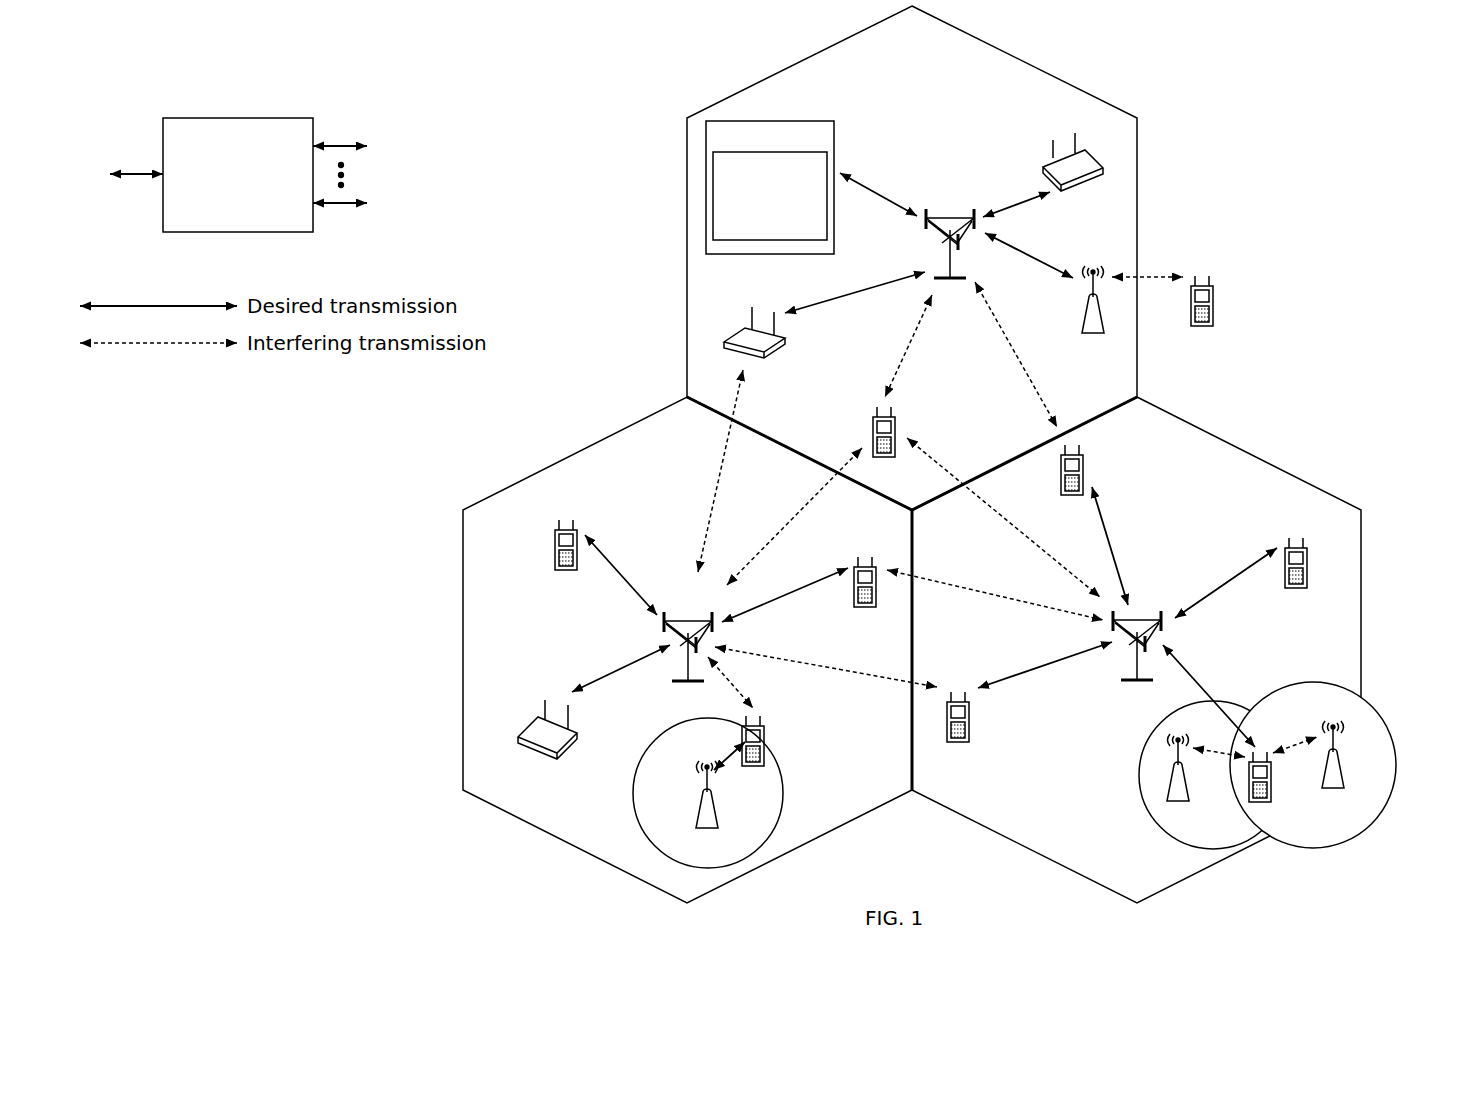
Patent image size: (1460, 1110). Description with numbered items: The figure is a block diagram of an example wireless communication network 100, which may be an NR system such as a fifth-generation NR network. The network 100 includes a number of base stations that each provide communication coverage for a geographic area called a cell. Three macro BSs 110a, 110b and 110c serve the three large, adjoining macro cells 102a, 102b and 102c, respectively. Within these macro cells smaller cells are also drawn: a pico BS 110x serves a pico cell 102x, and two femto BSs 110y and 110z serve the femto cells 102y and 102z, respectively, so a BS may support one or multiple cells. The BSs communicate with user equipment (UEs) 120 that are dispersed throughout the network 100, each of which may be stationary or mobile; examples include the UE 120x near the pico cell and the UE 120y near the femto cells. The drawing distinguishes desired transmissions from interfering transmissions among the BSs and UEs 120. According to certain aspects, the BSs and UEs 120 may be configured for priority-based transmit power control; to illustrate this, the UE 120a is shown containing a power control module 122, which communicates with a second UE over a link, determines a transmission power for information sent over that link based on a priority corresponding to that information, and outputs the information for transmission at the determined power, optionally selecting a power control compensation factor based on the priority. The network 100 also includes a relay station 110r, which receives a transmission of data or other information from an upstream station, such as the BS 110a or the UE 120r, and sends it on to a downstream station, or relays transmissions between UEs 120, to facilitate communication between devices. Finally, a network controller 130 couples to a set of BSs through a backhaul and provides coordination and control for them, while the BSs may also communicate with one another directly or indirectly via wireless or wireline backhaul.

The wireless communication network 100 is at (1292, 79).
The network controller 130 is at (235, 118).
The macro cell 102a is at (1040, 50).
The macro cell 102b is at (571, 454).
The macro cell 102c is at (1250, 453).
The pico cell 102x is at (656, 734).
The femto cell 102y is at (1143, 742).
The femto cell 102z is at (1325, 667).
The macro BS 110a is at (945, 210).
The macro BS 110b is at (697, 603).
The macro BS 110c is at (1150, 603).
The relay station 110r is at (1085, 318).
The pico BS 110x is at (714, 828).
The femto BS 110y is at (1188, 800).
The femto BS 110z is at (1342, 785).
The user equipment 120 is at (740, 326).
The UE 120a is at (769, 171).
The UE 120r is at (1214, 318).
The UE 120x is at (764, 738).
The UE 120y is at (1249, 802).
The power control module 122 is at (769, 196).